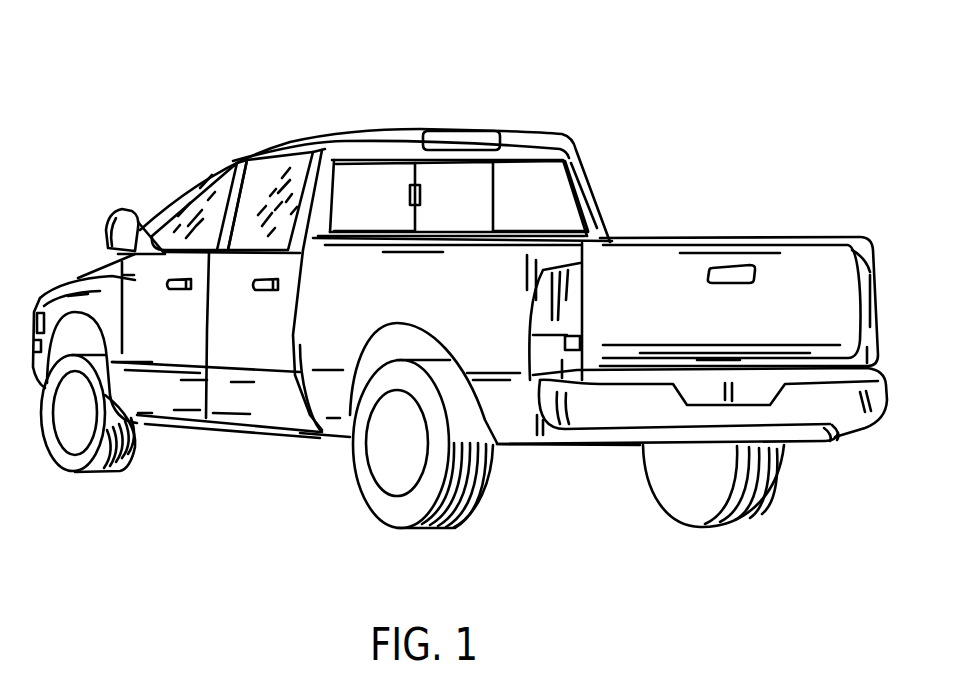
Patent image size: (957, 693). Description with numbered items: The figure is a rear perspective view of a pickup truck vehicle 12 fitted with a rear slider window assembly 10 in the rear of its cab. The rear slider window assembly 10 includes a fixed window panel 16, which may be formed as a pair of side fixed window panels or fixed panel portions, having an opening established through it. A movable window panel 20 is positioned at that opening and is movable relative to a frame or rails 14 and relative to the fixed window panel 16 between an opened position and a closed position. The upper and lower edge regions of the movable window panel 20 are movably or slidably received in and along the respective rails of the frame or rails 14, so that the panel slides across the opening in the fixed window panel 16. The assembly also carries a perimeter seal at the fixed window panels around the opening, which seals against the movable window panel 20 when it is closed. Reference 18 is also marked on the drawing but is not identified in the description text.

The rear slider window assembly 10 is at (538, 178).
The vehicle 12 is at (266, 75).
The frame or rails 14 is at (372, 240).
The fixed window panel 16 is at (393, 167).
The second fixed window panel 18 is at (563, 203).
The movable window panel 20 is at (472, 167).